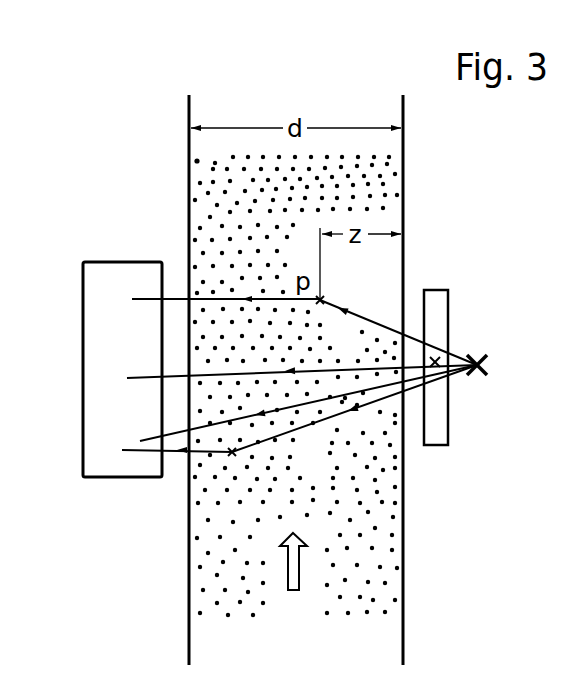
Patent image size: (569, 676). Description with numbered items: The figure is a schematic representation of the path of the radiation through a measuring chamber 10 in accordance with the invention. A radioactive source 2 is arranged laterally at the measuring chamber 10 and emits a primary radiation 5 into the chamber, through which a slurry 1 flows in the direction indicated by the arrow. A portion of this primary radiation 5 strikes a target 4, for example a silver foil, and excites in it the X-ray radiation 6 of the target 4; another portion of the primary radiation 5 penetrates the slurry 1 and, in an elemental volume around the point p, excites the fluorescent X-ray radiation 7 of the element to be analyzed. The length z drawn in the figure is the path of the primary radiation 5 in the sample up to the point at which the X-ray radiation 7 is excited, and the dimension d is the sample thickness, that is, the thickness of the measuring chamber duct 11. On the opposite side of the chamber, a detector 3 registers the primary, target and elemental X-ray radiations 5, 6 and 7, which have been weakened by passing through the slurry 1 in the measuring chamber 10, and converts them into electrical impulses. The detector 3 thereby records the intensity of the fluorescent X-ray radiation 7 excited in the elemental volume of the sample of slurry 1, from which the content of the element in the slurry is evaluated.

The slurry 1 is at (293, 592).
The radioactive source 2 is at (488, 370).
The detector 3 is at (100, 405).
The target 4 is at (438, 322).
The primary radiation 5 is at (375, 324).
The X-ray radiation of the target 6 is at (352, 367).
The X-ray radiation of the element to be analyzed 7 is at (177, 296).
The measuring chamber 10 is at (407, 547).
The measuring chamber duct 11 is at (387, 594).